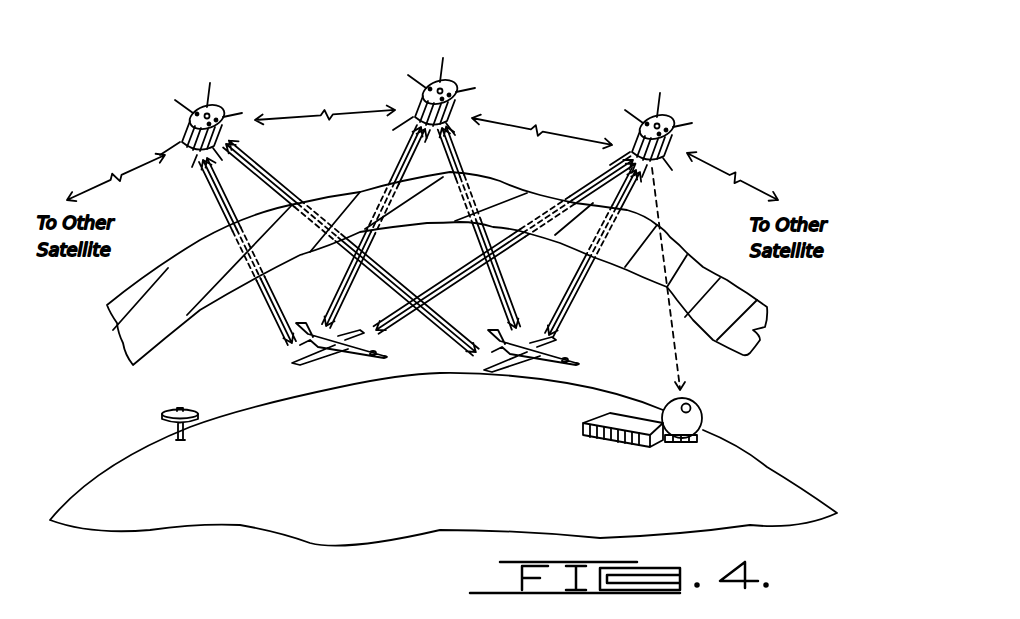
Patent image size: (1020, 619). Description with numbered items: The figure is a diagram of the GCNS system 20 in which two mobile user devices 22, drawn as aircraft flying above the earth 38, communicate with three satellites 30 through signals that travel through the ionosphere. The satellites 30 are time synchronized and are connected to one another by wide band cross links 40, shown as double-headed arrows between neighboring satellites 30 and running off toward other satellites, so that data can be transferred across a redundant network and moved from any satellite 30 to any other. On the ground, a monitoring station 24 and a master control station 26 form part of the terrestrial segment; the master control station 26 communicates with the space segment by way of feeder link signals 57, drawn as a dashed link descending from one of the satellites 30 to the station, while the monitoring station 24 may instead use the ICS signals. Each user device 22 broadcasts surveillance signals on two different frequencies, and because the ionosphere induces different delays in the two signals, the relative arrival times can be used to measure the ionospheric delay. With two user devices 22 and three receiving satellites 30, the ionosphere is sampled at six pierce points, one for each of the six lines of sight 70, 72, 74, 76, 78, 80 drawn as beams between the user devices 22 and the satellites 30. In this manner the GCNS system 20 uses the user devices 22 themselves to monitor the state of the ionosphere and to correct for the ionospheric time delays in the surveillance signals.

The GCNS system 20 is at (620, 82).
The mobile user device 22 is at (290, 361).
The monitoring station 24 is at (162, 417).
The master control station 26 is at (658, 440).
The satellite 30 is at (197, 103).
The earth 38 is at (346, 476).
The wide band cross link 40 is at (108, 178).
The feeder link signal 57 is at (678, 354).
The line of sight 70 is at (207, 216).
The line of sight 72 is at (381, 167).
The line of sight 74 is at (576, 188).
The line of sight 76 is at (276, 151).
The line of sight 78 is at (472, 163).
The line of sight 80 is at (610, 290).